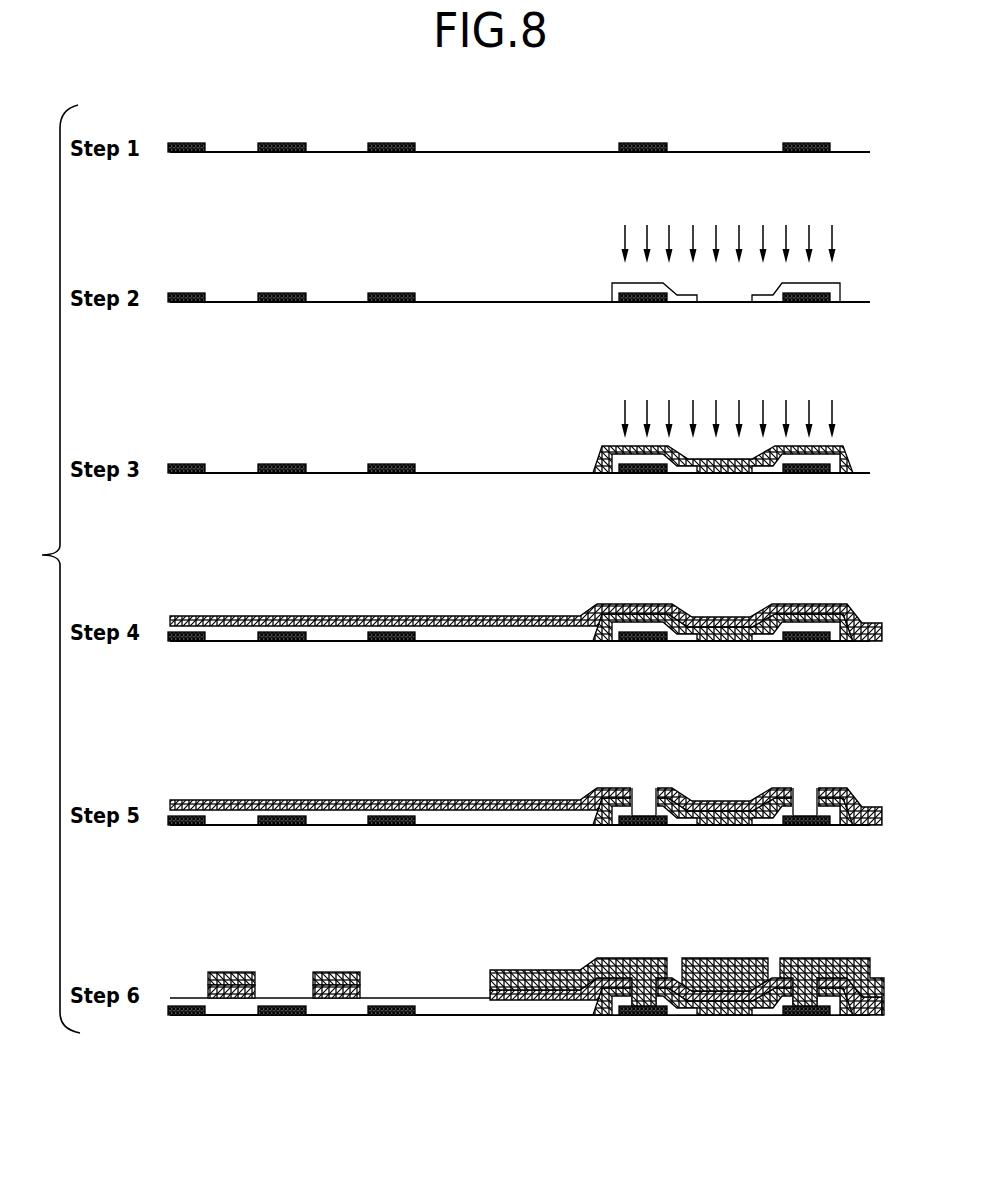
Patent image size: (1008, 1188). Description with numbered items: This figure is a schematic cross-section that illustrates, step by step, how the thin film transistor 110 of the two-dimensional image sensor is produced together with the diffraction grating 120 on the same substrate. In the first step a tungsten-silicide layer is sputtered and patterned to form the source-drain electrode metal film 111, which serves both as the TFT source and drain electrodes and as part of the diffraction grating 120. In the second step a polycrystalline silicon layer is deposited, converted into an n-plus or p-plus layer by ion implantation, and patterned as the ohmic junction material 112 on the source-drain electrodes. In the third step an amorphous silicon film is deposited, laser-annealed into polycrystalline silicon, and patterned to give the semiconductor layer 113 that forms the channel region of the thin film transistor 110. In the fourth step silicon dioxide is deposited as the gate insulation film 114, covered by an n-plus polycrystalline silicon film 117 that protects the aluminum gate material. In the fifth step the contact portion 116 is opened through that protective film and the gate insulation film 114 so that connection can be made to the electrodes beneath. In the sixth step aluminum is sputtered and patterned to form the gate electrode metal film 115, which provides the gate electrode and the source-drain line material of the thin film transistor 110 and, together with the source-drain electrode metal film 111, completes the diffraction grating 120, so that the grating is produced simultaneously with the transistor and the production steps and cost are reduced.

The thin film transistor 110 is at (708, 1024).
The source-drain electrode metal film 111 is at (389, 150).
The ohmic junction material 112 is at (677, 300).
The semiconductor layer 113 is at (724, 474).
The gate insulation film 114 is at (765, 618).
The gate electrode metal film 115 is at (718, 962).
The contact portion 116 is at (804, 800).
The protective film 117 is at (836, 605).
The diffraction grating 120 is at (240, 1024).